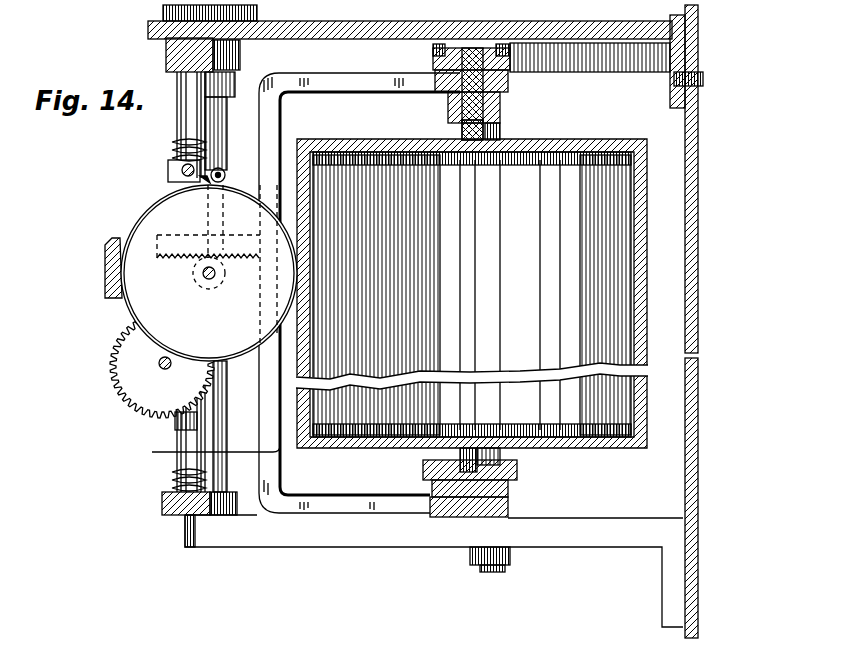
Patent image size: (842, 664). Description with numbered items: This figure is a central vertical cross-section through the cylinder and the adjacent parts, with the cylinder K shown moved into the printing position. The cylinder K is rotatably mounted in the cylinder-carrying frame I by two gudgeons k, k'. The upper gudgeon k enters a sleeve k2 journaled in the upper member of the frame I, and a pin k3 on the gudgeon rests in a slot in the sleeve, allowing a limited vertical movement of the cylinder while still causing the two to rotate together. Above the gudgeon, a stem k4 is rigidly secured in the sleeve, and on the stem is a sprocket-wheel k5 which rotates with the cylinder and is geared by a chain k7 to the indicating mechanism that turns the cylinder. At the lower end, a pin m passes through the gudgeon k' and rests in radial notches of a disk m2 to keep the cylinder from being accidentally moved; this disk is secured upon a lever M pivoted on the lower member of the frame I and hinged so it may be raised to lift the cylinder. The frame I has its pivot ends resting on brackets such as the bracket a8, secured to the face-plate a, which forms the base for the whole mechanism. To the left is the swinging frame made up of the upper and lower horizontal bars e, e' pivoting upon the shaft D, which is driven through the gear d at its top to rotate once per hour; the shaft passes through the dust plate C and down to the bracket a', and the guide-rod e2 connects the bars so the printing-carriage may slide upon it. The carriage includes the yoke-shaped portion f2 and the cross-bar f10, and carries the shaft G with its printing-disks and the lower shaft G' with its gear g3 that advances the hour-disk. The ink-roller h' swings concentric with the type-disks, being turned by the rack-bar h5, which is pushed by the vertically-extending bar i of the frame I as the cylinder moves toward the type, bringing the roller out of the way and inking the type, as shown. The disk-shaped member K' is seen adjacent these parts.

The gear d is at (255, 19).
The dust cap or plate C is at (356, 21).
The face-plate a is at (707, 321).
The bracket a8 is at (643, 57).
The cylinder-carrying frame I is at (515, 78).
The bracket a' is at (434, 571).
The cylinder K is at (472, 293).
The stem k4 is at (453, 48).
The sprocket-wheel k5 is at (504, 46).
The chain k7 is at (433, 64).
The sleeve k2 is at (448, 106).
The pin k3 is at (500, 118).
The gudgeon k is at (507, 127).
The gudgeon k' is at (480, 438).
The disk m2 is at (425, 470).
The pin m is at (518, 468).
The lever M is at (447, 518).
The horizontal bar e is at (171, 67).
The shaft D is at (205, 133).
The cross-bar f10 is at (170, 174).
The ink-roller h' is at (232, 172).
The yoke-shaped portion f2 is at (105, 276).
The gear g3 is at (120, 389).
The shaft G' is at (123, 362).
The disk K' is at (209, 273).
The shaft G is at (209, 292).
The rack-bar h5 is at (158, 258).
The guide-rod e2 is at (175, 426).
The vertically-extending bar i is at (208, 456).
The horizontal bar e' is at (180, 492).